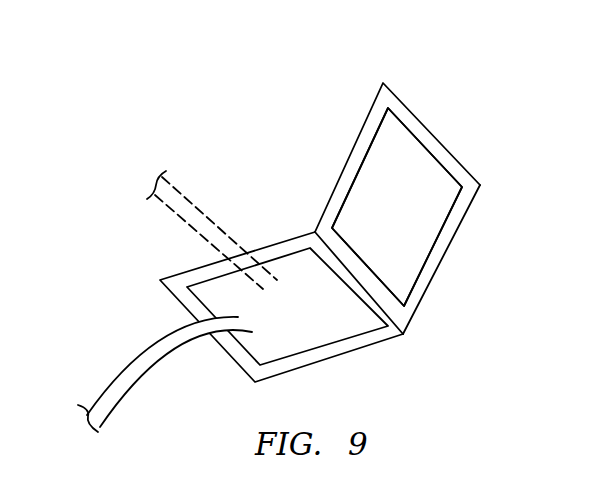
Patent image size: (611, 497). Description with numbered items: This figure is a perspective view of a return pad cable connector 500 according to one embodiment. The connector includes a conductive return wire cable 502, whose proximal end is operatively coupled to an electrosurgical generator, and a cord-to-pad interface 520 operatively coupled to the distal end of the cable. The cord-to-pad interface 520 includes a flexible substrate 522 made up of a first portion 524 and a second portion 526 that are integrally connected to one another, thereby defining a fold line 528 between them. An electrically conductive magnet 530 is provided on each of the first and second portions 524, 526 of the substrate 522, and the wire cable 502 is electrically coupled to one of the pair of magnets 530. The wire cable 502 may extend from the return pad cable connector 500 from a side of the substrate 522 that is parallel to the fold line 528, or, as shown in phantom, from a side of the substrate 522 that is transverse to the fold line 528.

The return pad cable connector 500 is at (242, 90).
The conductive return wire cable 502 is at (177, 190).
The cord-to-pad interface 520 is at (444, 208).
The flexible substrate 522 is at (444, 208).
The first portion 524 is at (337, 348).
The second portion 526 is at (462, 203).
The fold line 528 is at (398, 322).
The electrically conductive magnet 530 is at (373, 177).